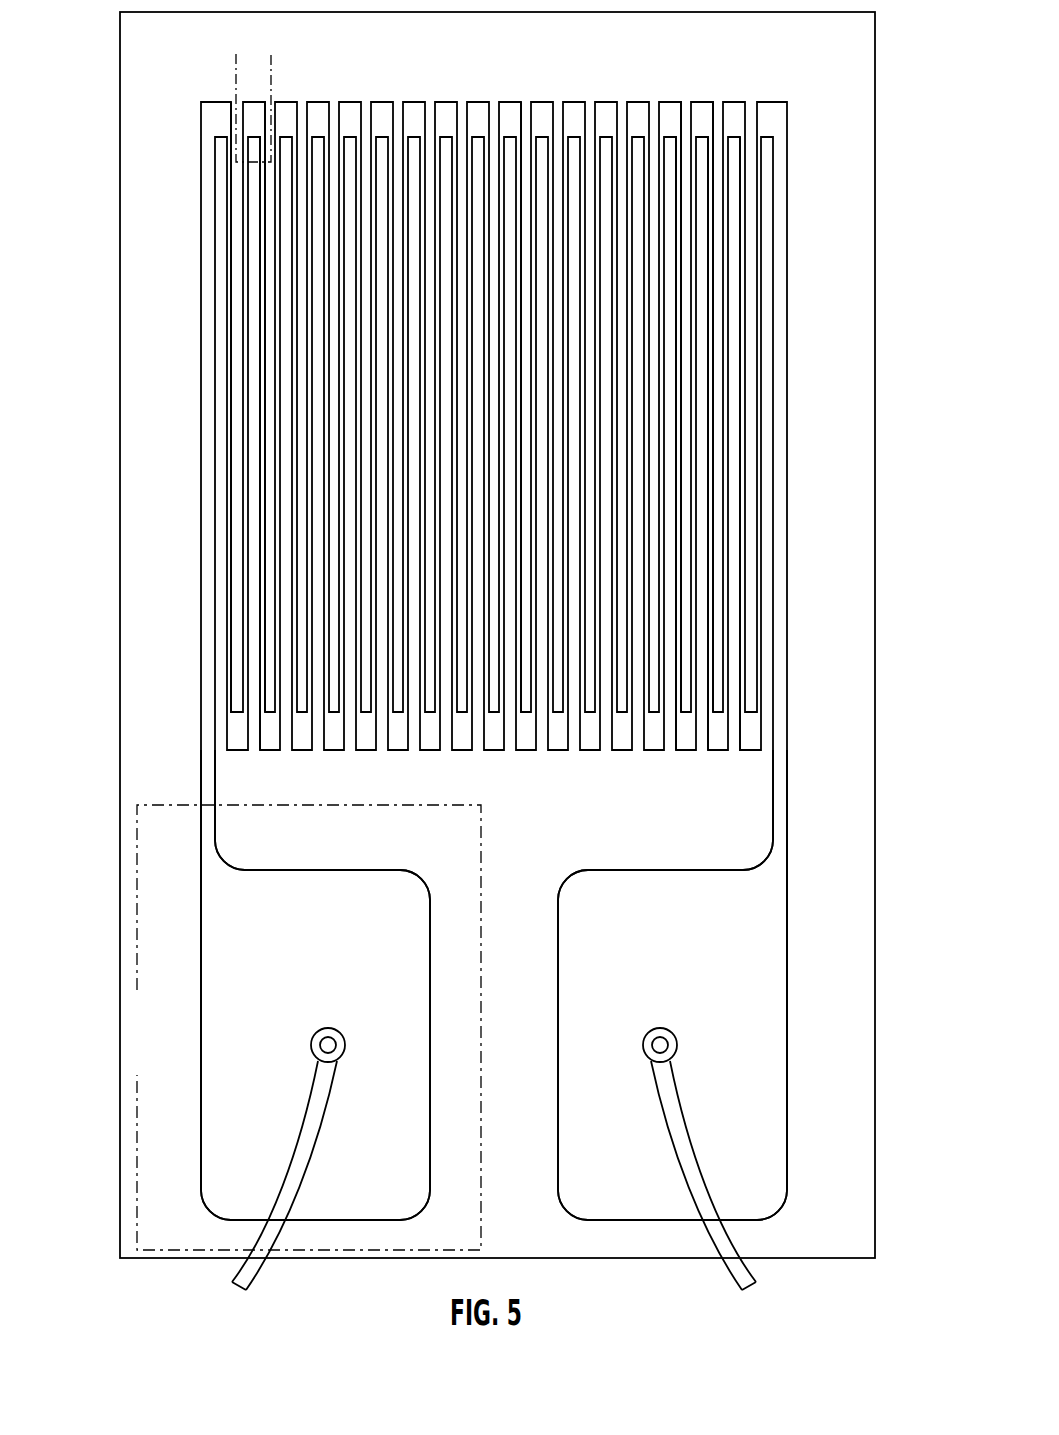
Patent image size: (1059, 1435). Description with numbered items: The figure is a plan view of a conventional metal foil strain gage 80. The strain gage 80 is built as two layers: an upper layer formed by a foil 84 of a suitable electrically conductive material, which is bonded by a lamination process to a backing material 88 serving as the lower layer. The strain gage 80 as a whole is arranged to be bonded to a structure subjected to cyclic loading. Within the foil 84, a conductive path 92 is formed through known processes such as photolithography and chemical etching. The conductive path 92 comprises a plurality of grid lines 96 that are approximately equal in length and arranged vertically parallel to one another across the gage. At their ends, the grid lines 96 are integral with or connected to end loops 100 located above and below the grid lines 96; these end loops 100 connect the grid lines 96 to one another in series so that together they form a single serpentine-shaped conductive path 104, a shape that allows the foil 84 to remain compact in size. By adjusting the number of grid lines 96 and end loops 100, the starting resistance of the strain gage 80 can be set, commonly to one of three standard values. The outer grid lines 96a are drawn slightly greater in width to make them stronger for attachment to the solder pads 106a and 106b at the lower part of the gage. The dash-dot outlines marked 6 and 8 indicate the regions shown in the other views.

The strain gage 80 is at (836, 378).
The foil 84 is at (525, 175).
The backing material 88 is at (150, 535).
The conductive path 92 is at (262, 400).
The grid lines 96 is at (278, 285).
The outer grid lines 96a is at (207, 745).
The end loops 100 is at (447, 110).
The serpentine-shaped conductive path 104 is at (660, 595).
The solder pad 106a is at (228, 945).
The solder pad 106b is at (740, 1012).
The section line for FIG. 6 is at (270, 44).
The section line for FIG. 8 is at (137, 990).